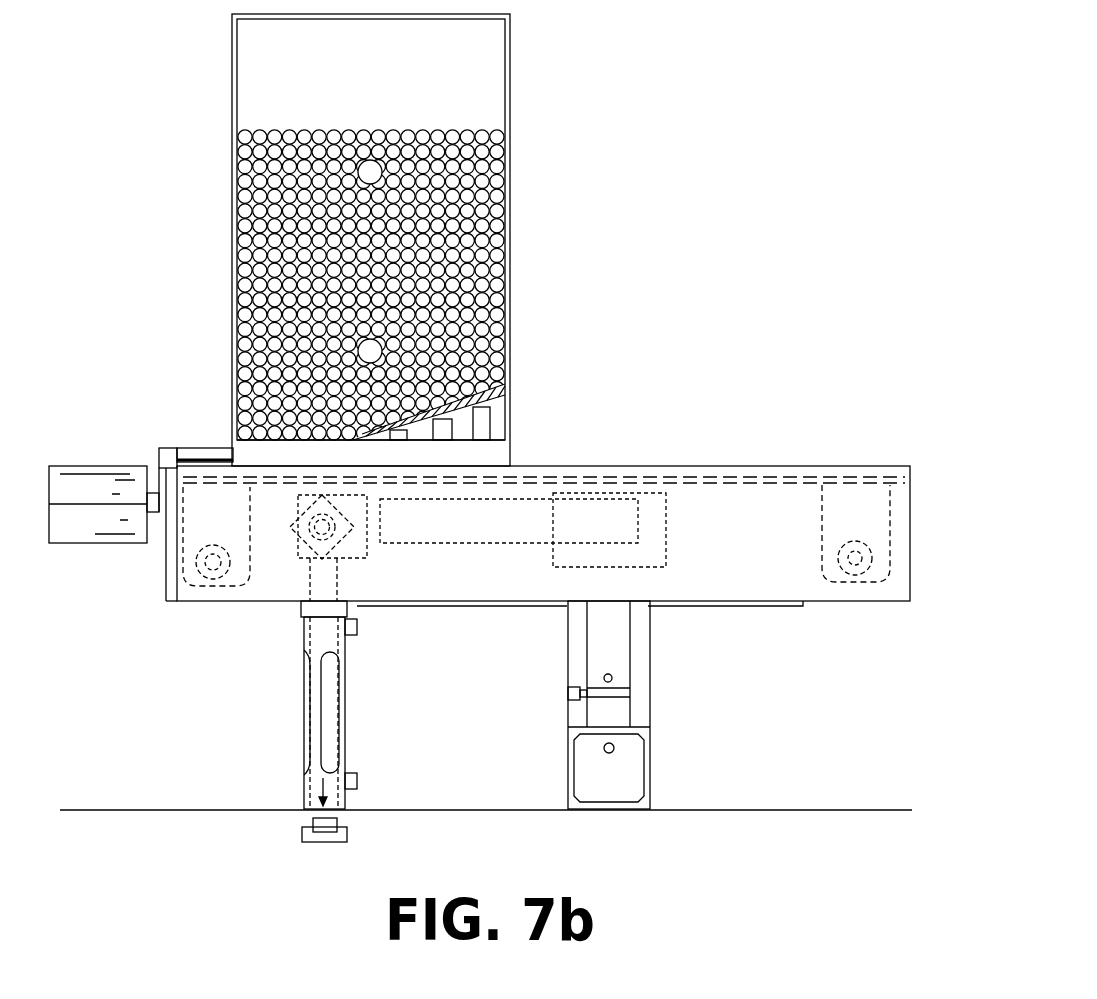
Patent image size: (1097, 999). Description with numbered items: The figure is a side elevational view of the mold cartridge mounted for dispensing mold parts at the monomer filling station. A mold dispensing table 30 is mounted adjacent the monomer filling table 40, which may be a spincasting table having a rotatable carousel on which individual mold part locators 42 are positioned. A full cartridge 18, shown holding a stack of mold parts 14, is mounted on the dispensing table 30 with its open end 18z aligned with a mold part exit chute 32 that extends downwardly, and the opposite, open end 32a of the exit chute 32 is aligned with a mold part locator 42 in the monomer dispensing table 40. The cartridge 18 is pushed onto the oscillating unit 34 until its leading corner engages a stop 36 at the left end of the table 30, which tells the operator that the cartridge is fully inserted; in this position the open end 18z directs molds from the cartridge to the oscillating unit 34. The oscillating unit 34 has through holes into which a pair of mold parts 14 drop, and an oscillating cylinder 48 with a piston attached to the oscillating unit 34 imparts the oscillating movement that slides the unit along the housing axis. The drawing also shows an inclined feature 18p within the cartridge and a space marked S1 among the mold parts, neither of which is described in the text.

The mold parts 14 is at (307, 137).
The cartridge 18 is at (511, 162).
The inclined plate 18p is at (500, 395).
The open end 18z is at (259, 441).
The void space S1 is at (376, 168).
The mold dispensing table 30 is at (633, 466).
The mold part exit chute 32 is at (346, 668).
The open end of exit chute 32a is at (346, 800).
The oscillating unit 34 is at (537, 466).
The stop 36 is at (190, 449).
The monomer filling table 40 is at (476, 810).
The mold part locator 42 is at (347, 834).
The oscillating cylinder 48 is at (94, 478).